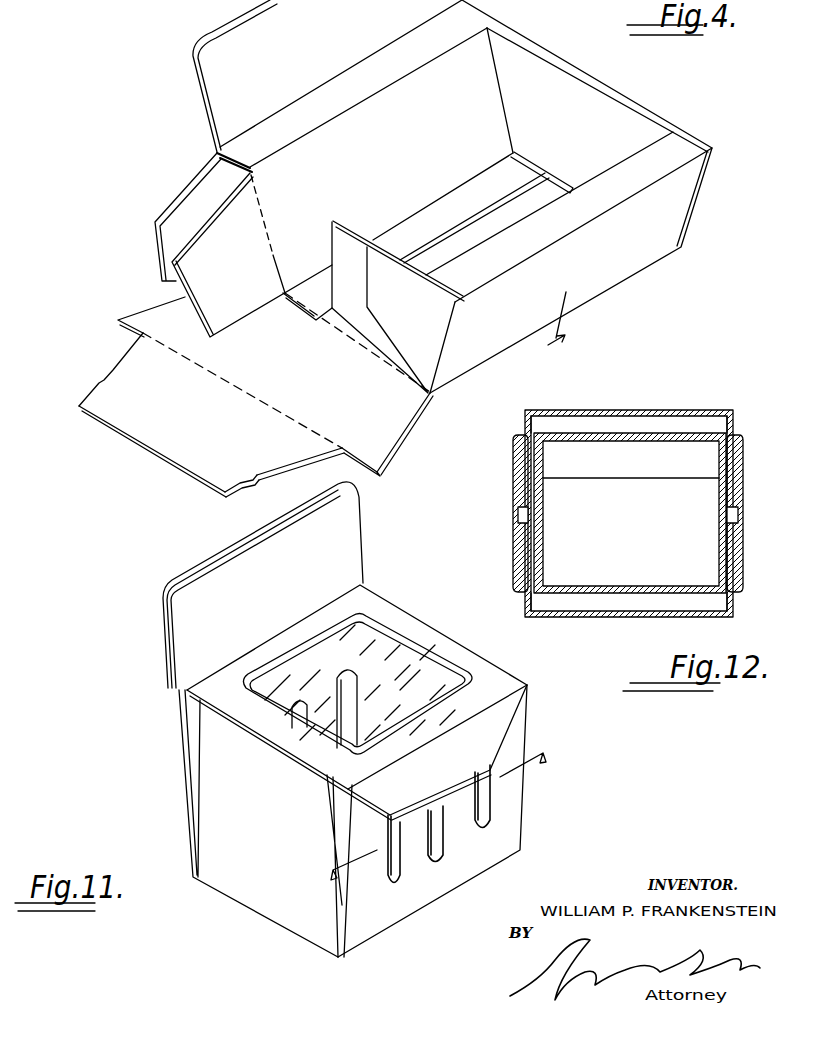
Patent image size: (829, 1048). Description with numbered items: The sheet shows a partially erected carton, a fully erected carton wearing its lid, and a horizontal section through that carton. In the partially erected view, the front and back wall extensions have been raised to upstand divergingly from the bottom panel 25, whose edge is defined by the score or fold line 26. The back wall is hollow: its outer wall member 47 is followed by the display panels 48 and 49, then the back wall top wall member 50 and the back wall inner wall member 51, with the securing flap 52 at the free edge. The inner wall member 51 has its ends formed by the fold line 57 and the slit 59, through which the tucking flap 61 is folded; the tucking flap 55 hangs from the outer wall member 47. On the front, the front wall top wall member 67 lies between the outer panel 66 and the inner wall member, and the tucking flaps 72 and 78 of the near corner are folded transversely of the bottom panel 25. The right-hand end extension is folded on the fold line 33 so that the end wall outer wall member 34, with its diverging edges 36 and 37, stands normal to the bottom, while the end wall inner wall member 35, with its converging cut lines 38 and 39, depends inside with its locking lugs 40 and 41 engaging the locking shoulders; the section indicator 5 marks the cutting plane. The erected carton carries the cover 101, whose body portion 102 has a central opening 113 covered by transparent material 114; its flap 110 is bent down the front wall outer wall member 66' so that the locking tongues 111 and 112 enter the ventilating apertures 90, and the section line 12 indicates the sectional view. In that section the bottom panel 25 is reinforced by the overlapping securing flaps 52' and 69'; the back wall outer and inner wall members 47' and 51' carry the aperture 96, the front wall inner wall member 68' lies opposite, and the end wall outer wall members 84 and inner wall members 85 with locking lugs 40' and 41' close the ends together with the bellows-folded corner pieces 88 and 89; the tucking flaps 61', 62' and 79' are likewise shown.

In FIG. 4, the display panel 48 is at (203, 96).
In FIG. 11, the display panel 48 is at (165, 638).
In FIG. 4, the back wall outer wall member 47 is at (253, 170).
In FIG. 4, the back wall top wall member 50 is at (378, 82).
In FIG. 4, the end wall inner wall member 35 is at (632, 116).
In FIG. 4, the back wall inner wall member 51 is at (512, 90).
In FIG. 4, the securing flap 52 is at (443, 188).
In FIG. 4, the end wall outer wall member 34 is at (560, 182).
In FIG. 4, the bottom panel 25 is at (536, 203).
In FIG. 12, the bottom panel 25 is at (667, 424).
In FIG. 4, the front wall top wall member 67 is at (605, 196).
In FIG. 4, the tucking flap 72 is at (435, 323).
In FIG. 4, the tucking flap 78 is at (347, 227).
In FIG. 4, the panel 66 is at (396, 339).
In FIG. 4, the section line 5 is at (545, 324).
In FIG. 4, the tucking flap 55 is at (190, 195).
In FIG. 4, the tucking flap 61 is at (252, 256).
In FIG. 4, the score or fold line 57 is at (267, 230).
In FIG. 4, the slit 59 is at (293, 250).
In FIG. 4, the diverging end edge 36 is at (148, 318).
In FIG. 4, the cut line 38 is at (127, 362).
In FIG. 4, the locking lug 40 is at (139, 434).
In FIG. 4, the score or fold line 33 is at (252, 397).
In FIG. 4, the score or fold line 26 is at (350, 343).
In FIG. 4, the locking lug 41 is at (249, 488).
In FIG. 4, the cut line 39 is at (277, 467).
In FIG. 4, the diverging end edge 37 is at (408, 421).
In FIG. 12, the back wall outer wall member 47' is at (629, 496).
In FIG. 12, the securing flap 52' is at (631, 483).
In FIG. 12, the end wall outer wall member 84 is at (517, 514).
In FIG. 11, the end wall outer wall member 84 is at (258, 823).
In FIG. 12, the corner piece 88 is at (530, 428).
In FIG. 11, the corner piece 88 is at (185, 762).
In FIG. 12, the corner piece 89 is at (527, 617).
In FIG. 11, the corner piece 89 is at (340, 822).
In FIG. 12, the locking lug 40' is at (626, 428).
In FIG. 12, the end panel 61' is at (562, 461).
In FIG. 12, the back wall inner wall member 51' is at (653, 451).
In FIG. 11, the back wall inner wall member 51' is at (241, 642).
In FIG. 12, the panel 62' is at (711, 458).
In FIG. 12, the end wall inner wall member 85 is at (543, 522).
In FIG. 11, the end wall inner wall member 85 is at (413, 661).
In FIG. 12, the securing flap 69' is at (648, 524).
In FIG. 12, the front wall inner wall member 68' is at (640, 571).
In FIG. 12, the flap 79' is at (700, 560).
In FIG. 12, the locking lug 41' is at (632, 601).
In FIG. 12, the front wall outer wall member 66' is at (634, 625).
In FIG. 11, the front wall outer wall member 66' is at (432, 821).
In FIG. 11, the display panel 49 is at (350, 517).
In FIG. 11, the cover 101 is at (399, 592).
In FIG. 11, the cover body portion 102 is at (410, 617).
In FIG. 11, the locking tongue 112 is at (488, 768).
In FIG. 11, the elongated aperture 96 is at (290, 704).
In FIG. 11, the transparent material 114 is at (312, 640).
In FIG. 11, the central opening 113 is at (337, 627).
In FIG. 11, the locking tongue 111 is at (398, 822).
In FIG. 11, the flap 110 is at (454, 834).
In FIG. 11, the elongated aperture 90 is at (490, 807).
In FIG. 11, the section line 12 is at (438, 812).